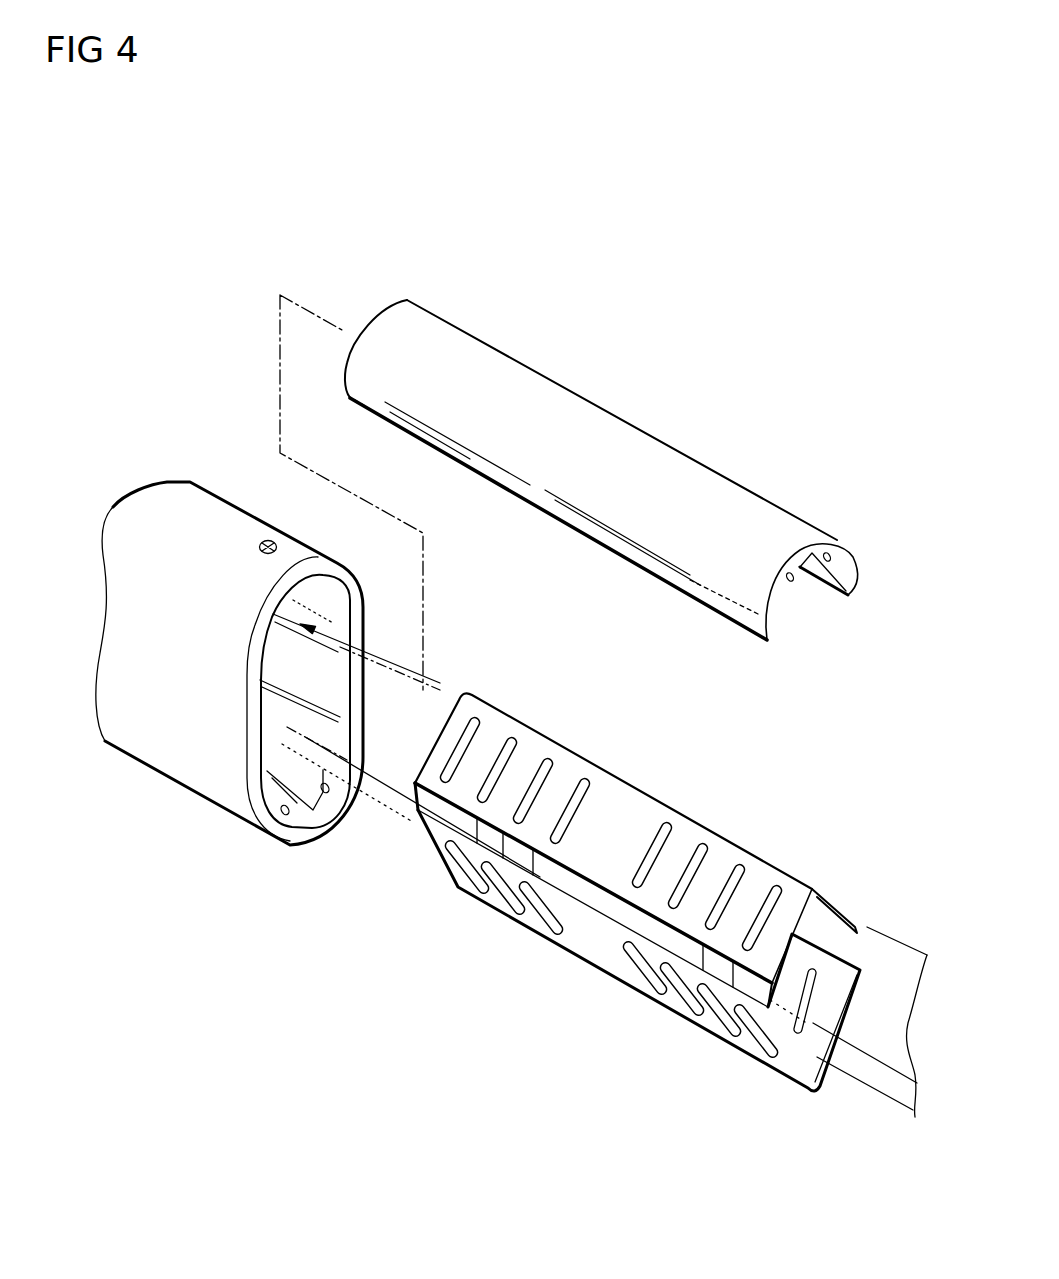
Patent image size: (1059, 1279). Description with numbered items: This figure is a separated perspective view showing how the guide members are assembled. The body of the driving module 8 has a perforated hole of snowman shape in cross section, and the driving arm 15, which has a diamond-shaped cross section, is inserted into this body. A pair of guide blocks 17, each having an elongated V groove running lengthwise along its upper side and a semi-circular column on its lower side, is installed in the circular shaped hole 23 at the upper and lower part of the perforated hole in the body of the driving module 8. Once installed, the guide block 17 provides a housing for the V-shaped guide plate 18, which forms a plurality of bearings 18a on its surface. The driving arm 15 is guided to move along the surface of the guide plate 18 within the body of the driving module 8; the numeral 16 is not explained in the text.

The driving module 8 is at (211, 513).
The driving arm 15 is at (890, 952).
The inner guide rail 16 is at (268, 715).
The guide block 17 is at (687, 475).
The guide plate 18 is at (633, 800).
The bearings 18a is at (625, 965).
The circular shaped hole 23 is at (340, 597).